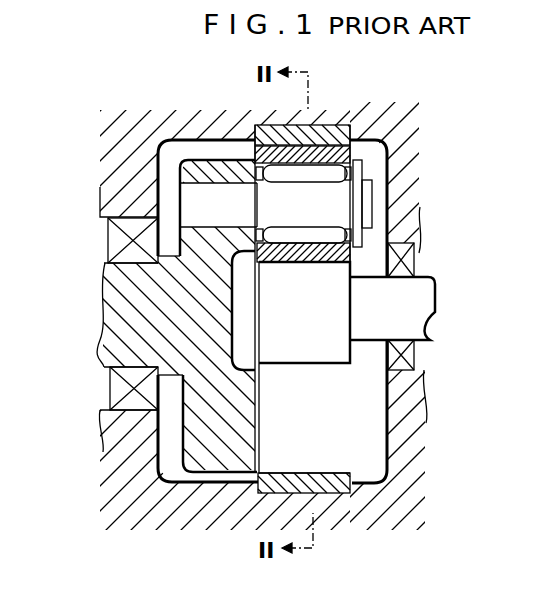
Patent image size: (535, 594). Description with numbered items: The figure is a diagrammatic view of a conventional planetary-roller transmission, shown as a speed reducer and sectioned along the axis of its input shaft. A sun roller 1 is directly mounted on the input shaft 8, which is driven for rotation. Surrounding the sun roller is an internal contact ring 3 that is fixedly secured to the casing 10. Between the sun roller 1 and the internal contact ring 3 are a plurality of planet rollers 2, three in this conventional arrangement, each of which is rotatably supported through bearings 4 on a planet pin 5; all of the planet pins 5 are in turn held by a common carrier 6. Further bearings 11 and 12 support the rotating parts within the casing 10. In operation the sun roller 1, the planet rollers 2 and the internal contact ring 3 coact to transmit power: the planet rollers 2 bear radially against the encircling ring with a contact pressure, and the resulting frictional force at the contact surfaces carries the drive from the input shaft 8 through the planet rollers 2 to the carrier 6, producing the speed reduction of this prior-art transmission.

The sun roller 1 is at (322, 289).
The planet rollers 2 is at (252, 151).
The internal contact ring 3 is at (336, 124).
The bearings 4 is at (370, 152).
The planet pins 5 is at (197, 197).
The carrier 6 is at (212, 458).
The input shaft 8 is at (413, 303).
The casing 10 is at (383, 490).
The bearing 11 is at (414, 353).
The bearing 12 is at (112, 385).